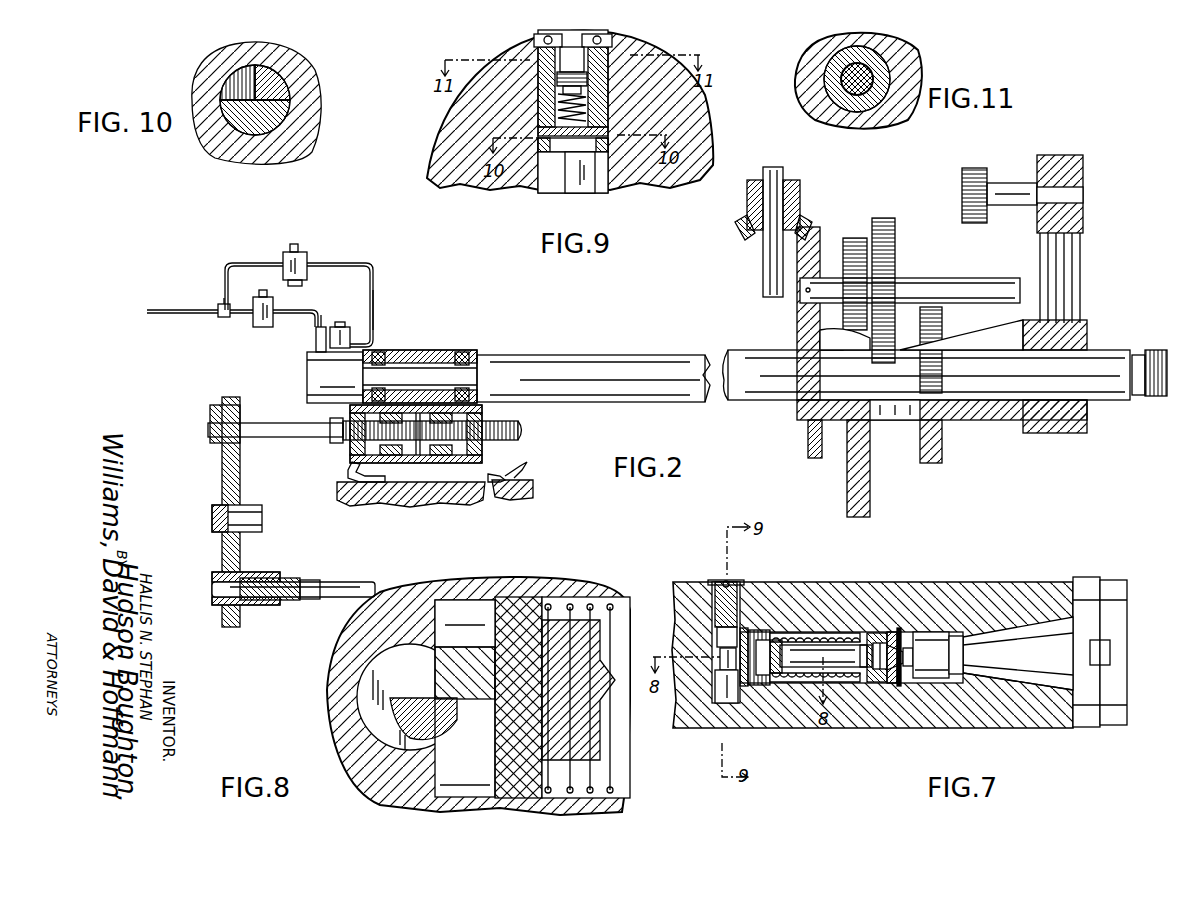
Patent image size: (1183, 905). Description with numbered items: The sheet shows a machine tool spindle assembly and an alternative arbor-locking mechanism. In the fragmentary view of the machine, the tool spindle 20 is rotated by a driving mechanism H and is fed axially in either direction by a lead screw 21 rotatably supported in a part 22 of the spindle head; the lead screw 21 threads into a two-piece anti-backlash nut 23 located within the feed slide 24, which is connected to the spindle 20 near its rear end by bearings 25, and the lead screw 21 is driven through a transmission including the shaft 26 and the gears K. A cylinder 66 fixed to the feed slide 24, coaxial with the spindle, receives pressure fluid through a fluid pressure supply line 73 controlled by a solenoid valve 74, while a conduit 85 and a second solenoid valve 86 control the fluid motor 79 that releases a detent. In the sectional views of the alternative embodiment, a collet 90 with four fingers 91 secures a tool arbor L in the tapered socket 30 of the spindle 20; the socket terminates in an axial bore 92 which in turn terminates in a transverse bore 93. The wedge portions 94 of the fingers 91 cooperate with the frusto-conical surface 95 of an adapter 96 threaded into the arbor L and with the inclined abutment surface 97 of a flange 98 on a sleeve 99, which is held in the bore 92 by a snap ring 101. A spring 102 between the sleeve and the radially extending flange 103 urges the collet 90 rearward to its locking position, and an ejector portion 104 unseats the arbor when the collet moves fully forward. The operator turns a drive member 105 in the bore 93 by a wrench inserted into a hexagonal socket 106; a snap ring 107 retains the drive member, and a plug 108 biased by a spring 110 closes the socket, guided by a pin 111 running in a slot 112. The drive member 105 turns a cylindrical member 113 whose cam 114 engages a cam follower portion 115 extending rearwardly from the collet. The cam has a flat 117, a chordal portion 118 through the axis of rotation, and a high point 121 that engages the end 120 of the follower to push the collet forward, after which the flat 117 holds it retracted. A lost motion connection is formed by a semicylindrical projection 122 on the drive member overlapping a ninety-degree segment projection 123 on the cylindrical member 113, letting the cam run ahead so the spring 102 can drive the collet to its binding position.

In FIG. 11, the tool spindle 20 is at (803, 117).
In FIG. 2, the tool spindle 20 is at (1130, 350).
In FIG. 7, the tool spindle 20 is at (980, 590).
In FIG. 2, the lead screw 21 is at (518, 432).
In FIG. 2, the part of the spindle head 22 is at (453, 470).
In FIG. 2, the two-piece anti-backlash nut 23 is at (482, 414).
In FIG. 2, the feed slide 24 is at (437, 352).
In FIG. 2, the bearings 25 is at (377, 353).
In FIG. 2, the shaft 26 is at (343, 587).
In FIG. 7, the tapered socket 30 is at (1010, 617).
In FIG. 2, the cylinder 66 is at (327, 393).
In FIG. 2, the fluid pressure supply line 73 is at (318, 327).
In FIG. 2, the solenoid valve 74 is at (257, 327).
In FIG. 2, the motor 79 is at (352, 333).
In FIG. 2, the conduit 85 is at (378, 312).
In FIG. 2, the solenoid valve 86 is at (307, 252).
In FIG. 7, the collet 90 is at (783, 690).
In FIG. 7, the fingers 91 is at (880, 627).
In FIG. 7, the axial bore 92 is at (830, 587).
In FIG. 9, the bore 93 is at (600, 192).
In FIG. 8, the bore 93 is at (370, 672).
In FIG. 7, the bore 93 is at (720, 707).
In FIG. 7, the wedge portions 94 is at (887, 637).
In FIG. 7, the frusto-conical surface 95 is at (897, 687).
In FIG. 7, the adapter 96 is at (873, 690).
In FIG. 7, the inclined abutment surface 97 is at (897, 627).
In FIG. 7, the flange 98 is at (887, 680).
In FIG. 7, the sleeve 99 is at (847, 700).
In FIG. 7, the snap ring 101 is at (937, 728).
In FIG. 7, the spring 102 is at (787, 590).
In FIG. 7, the radially extending flange 103 is at (755, 705).
In FIG. 7, the ejector portion 104 is at (833, 650).
In FIG. 9, the drive member 105 is at (620, 98).
In FIG. 11, the drive member 105 is at (843, 125).
In FIG. 7, the drive member 105 is at (717, 582).
In FIG. 9, the hexagonal socket 106 is at (537, 44).
In FIG. 11, the hexagonal socket 106 is at (877, 118).
In FIG. 7, the hexagonal socket 106 is at (723, 570).
In FIG. 9, the snap ring 107 is at (627, 56).
In FIG. 7, the snap ring 107 is at (740, 582).
In FIG. 9, the plug 108 is at (607, 36).
In FIG. 11, the plug 108 is at (897, 54).
In FIG. 9, the spring 110 is at (537, 113).
In FIG. 9, the pin 111 is at (537, 77).
In FIG. 9, the slot 112 is at (537, 94).
In FIG. 9, the cylindrical member 113 is at (607, 150).
In FIG. 7, the cylindrical member 113 is at (717, 687).
In FIG. 9, the cam 114 is at (577, 190).
In FIG. 8, the cam 114 is at (393, 717).
In FIG. 7, the cam 114 is at (690, 637).
In FIG. 8, the cam follower portion 115 is at (500, 580).
In FIG. 7, the cam follower portion 115 is at (740, 627).
In FIG. 8, the flat 117 is at (433, 703).
In FIG. 8, the straight line or chordal portion 118 is at (427, 698).
In FIG. 8, the end of the cam follower portion 120 is at (420, 663).
In FIG. 8, the high point 121 is at (460, 750).
In FIG. 10, the semicylindrical projection 122 is at (285, 97).
In FIG. 10, the projection 123 is at (207, 152).
In FIG. 2, the driving mechanism H is at (911, 236).
In FIG. 2, the gears K is at (250, 553).
In FIG. 7, the tool arbor L is at (1060, 637).